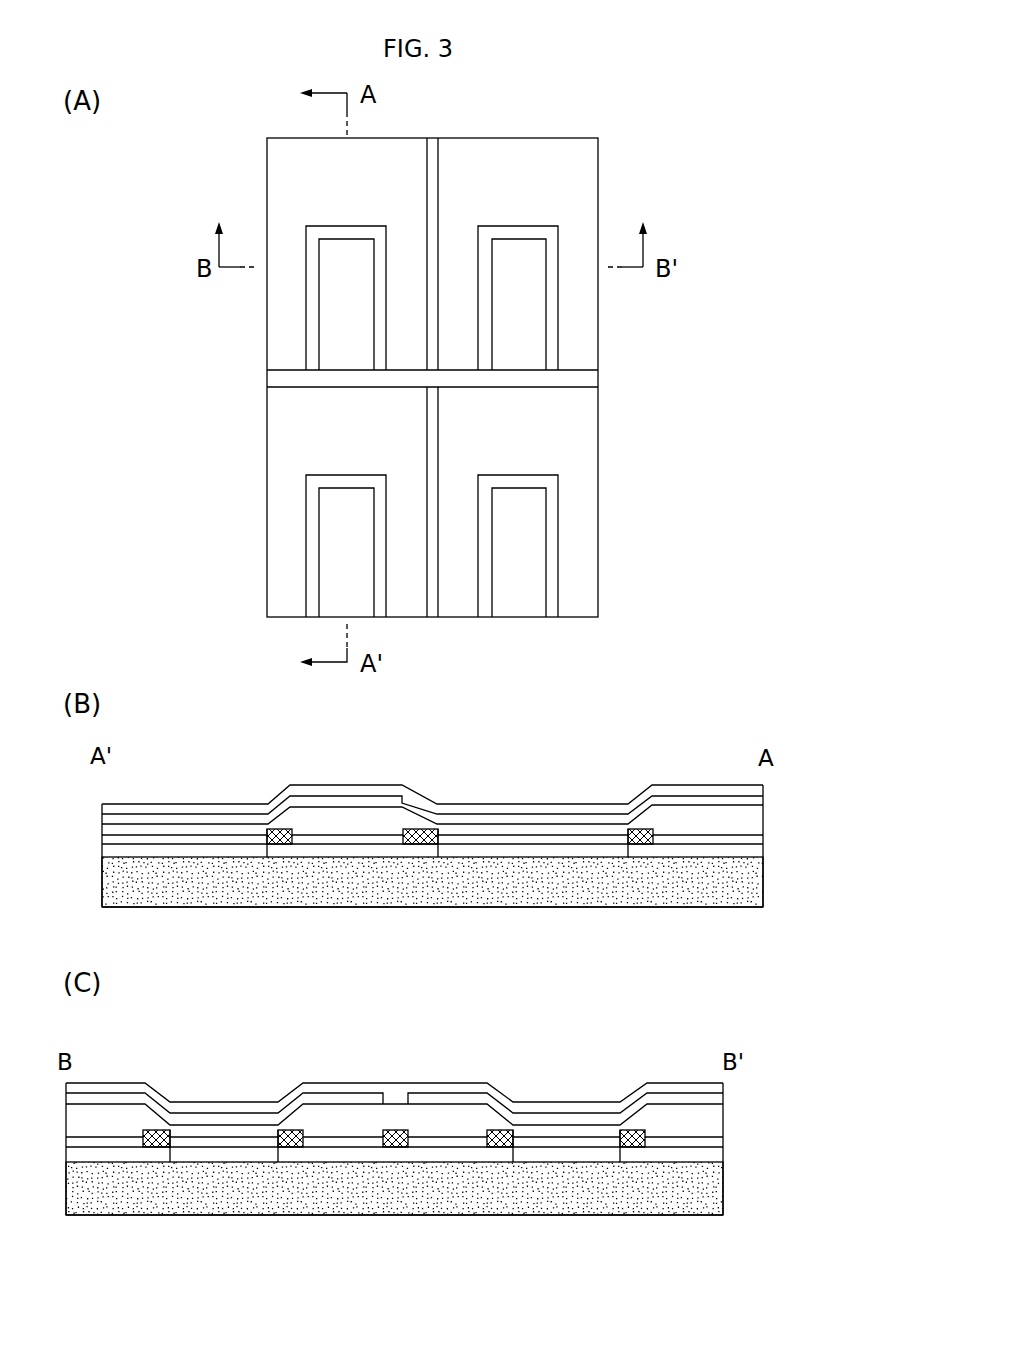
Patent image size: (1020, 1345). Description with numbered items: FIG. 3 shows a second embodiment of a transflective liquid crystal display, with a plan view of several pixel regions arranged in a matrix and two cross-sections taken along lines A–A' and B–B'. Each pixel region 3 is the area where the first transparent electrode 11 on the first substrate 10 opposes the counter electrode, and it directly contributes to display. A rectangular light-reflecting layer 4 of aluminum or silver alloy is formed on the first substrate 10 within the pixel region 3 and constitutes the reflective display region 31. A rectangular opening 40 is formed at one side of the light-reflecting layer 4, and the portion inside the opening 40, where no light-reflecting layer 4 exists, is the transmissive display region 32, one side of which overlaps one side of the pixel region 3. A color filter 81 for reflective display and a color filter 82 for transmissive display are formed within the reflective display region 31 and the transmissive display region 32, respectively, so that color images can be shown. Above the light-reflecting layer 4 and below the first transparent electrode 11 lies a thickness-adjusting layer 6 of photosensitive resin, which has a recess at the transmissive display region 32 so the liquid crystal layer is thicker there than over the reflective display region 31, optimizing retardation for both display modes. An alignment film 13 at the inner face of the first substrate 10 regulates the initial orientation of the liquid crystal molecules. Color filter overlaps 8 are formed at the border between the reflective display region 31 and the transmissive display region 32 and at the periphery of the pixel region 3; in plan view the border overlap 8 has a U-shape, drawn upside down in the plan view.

The pixel region 3 is at (601, 138).
The light-reflecting layer 4 is at (763, 849).
The thickness-adjusting layer 6 is at (102, 834).
The color filter overlap 8 is at (553, 341).
The first substrate 10 is at (102, 890).
The first transparent electrode 11 is at (102, 816).
The alignment film 13 is at (102, 804).
The reflective display region 31 is at (432, 377).
The transmissive display region 32 is at (431, 428).
The opening 40 is at (546, 308).
The color filter for reflective display 81 is at (763, 838).
The color filter for transmissive display 82 is at (102, 847).